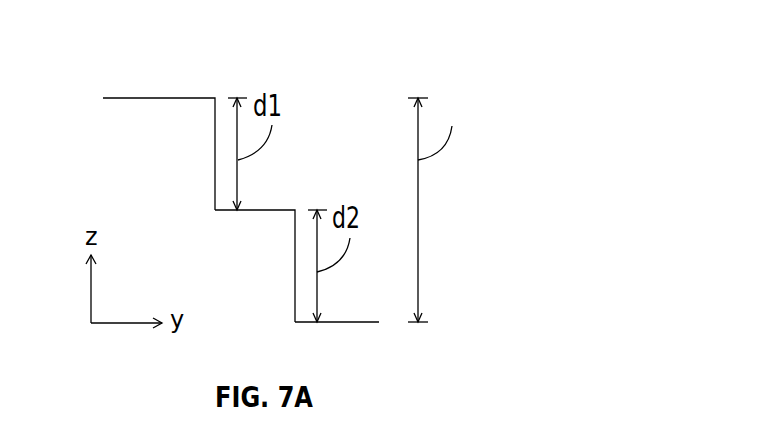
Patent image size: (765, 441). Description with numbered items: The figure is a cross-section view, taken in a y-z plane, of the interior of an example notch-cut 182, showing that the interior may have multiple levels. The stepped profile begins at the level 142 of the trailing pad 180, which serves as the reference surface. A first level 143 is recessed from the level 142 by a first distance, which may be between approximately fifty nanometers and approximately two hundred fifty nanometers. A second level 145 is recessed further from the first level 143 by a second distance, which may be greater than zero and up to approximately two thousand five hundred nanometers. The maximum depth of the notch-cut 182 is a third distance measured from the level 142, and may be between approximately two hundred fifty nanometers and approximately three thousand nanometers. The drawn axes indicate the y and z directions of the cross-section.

The trailing pad 180 is at (235, 165).
The level 142 is at (163, 98).
The first level 143 is at (254, 210).
The second level 145 is at (333, 322).
The notch-cut 182 is at (487, 166).